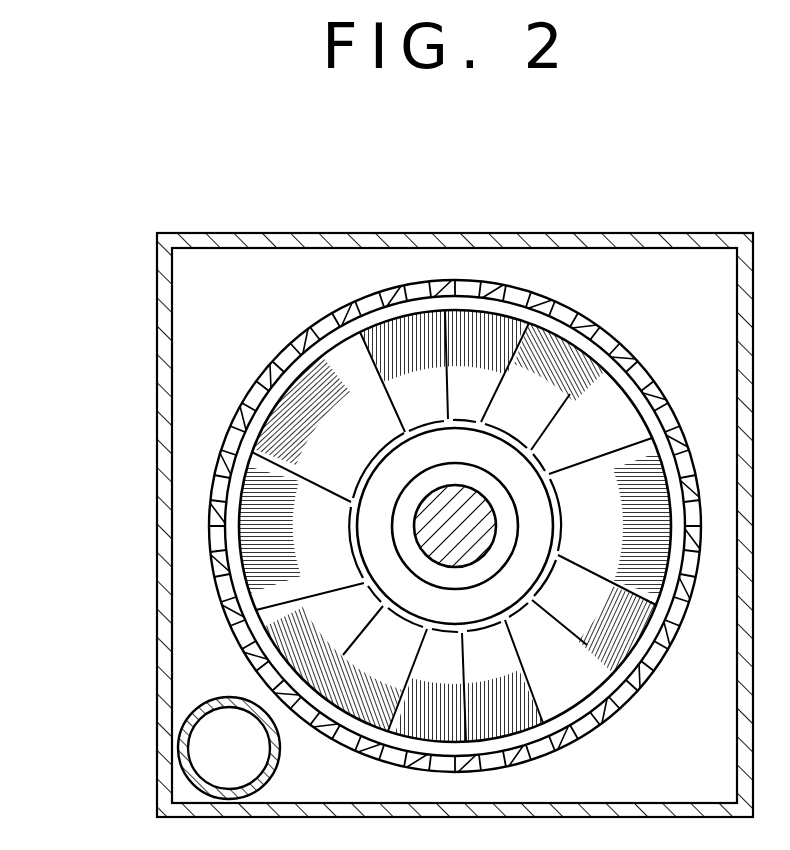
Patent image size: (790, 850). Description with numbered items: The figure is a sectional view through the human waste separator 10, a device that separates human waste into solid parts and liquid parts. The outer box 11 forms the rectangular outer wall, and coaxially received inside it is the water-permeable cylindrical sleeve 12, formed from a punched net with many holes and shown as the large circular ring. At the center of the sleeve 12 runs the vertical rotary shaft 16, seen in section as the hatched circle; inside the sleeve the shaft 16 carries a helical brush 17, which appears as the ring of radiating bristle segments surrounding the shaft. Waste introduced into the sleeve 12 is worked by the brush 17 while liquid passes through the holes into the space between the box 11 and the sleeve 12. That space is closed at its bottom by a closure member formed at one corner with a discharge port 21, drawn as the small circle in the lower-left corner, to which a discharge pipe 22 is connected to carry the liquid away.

The human waste separator 10 is at (157, 278).
The outer box 11 is at (162, 336).
The water-permeable cylindrical sleeve 12 is at (243, 402).
The vertical rotary shaft 16 is at (427, 527).
The helical brush 17 is at (348, 511).
The discharge port 21 is at (212, 716).
The discharge pipe 22 is at (183, 760).